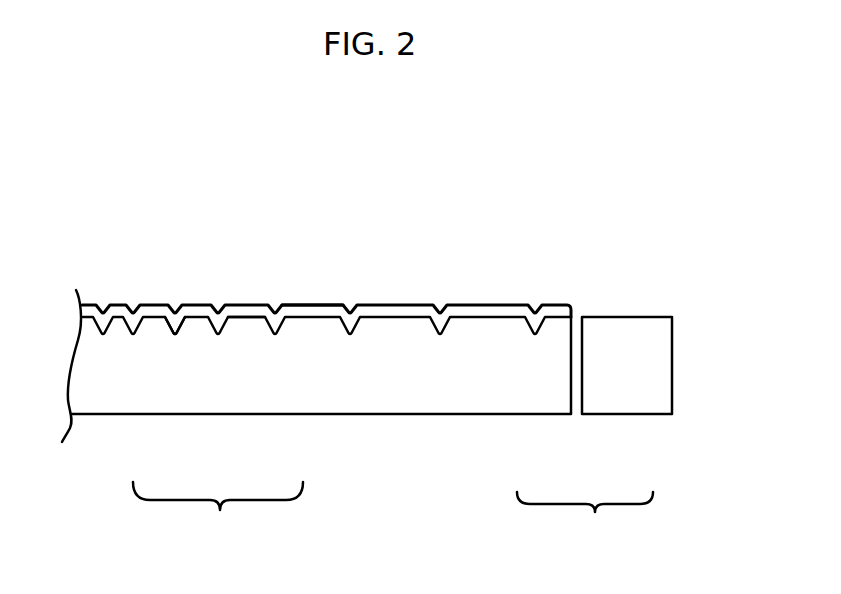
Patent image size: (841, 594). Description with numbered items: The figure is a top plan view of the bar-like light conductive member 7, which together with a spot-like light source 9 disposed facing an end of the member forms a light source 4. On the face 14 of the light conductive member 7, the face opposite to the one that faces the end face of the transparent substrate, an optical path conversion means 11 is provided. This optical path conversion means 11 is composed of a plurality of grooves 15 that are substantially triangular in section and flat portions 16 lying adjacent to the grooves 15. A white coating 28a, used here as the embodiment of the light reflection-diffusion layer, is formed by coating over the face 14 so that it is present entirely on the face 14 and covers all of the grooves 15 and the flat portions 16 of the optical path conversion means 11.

The light source 4 is at (585, 524).
The light conductive member 7 is at (543, 397).
The spot-like light source 9 is at (637, 397).
The optical path conversion means 11 is at (218, 513).
The face 14 is at (498, 307).
The groove 15 is at (175, 318).
The flat portion 16 is at (247, 318).
The white coating 28a is at (318, 307).